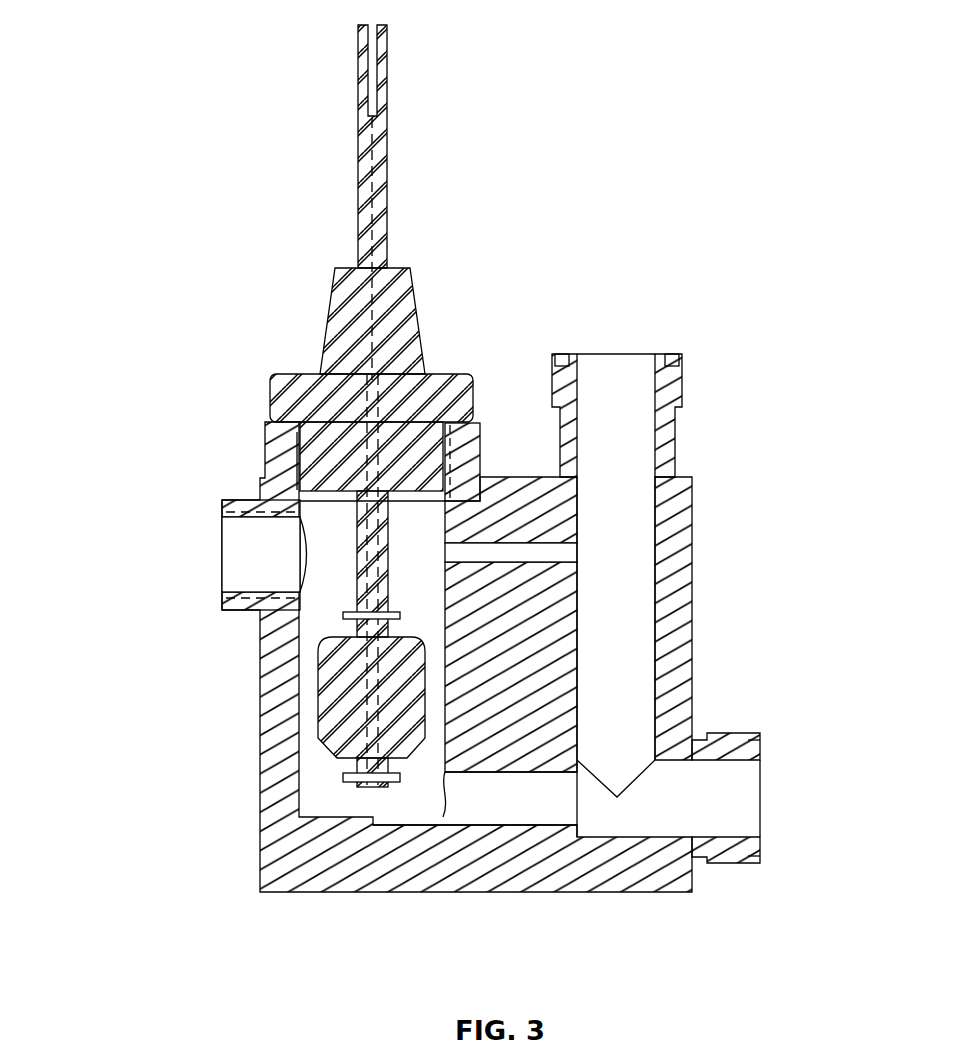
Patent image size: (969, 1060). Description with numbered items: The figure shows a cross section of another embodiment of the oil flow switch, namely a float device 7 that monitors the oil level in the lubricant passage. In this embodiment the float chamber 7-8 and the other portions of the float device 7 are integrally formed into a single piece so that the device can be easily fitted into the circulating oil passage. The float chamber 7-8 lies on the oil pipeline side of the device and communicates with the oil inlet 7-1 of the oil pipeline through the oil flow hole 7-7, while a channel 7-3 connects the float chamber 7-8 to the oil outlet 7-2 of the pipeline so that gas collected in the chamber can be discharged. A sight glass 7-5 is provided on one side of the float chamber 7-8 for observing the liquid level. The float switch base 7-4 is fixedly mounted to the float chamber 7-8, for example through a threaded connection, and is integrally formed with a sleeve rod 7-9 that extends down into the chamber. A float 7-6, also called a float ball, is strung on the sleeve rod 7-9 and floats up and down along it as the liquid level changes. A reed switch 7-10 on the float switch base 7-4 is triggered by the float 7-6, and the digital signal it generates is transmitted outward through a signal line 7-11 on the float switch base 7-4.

The float device 7 is at (453, 494).
The oil inlet 7-1 is at (725, 783).
The oil outlet 7-2 is at (598, 363).
The channel 7-3 is at (465, 552).
The float switch base 7-4 is at (401, 268).
The sight glass 7-5 is at (222, 520).
The float 7-6 is at (355, 733).
The oil flow hole 7-7 is at (508, 810).
The float chamber 7-8 is at (292, 690).
The sleeve rod 7-9 is at (341, 630).
The reed switch 7-10 is at (352, 396).
The signal line 7-11 is at (342, 64).